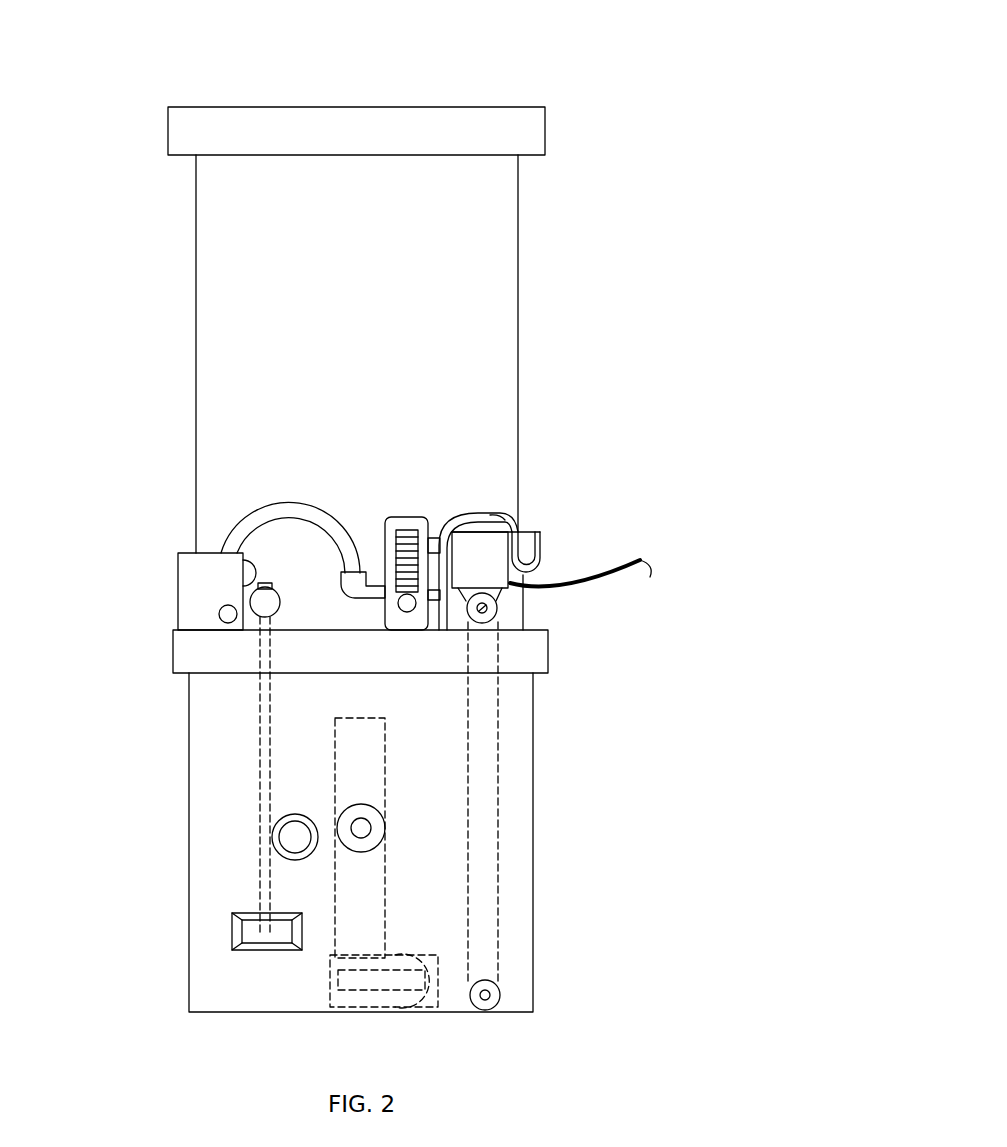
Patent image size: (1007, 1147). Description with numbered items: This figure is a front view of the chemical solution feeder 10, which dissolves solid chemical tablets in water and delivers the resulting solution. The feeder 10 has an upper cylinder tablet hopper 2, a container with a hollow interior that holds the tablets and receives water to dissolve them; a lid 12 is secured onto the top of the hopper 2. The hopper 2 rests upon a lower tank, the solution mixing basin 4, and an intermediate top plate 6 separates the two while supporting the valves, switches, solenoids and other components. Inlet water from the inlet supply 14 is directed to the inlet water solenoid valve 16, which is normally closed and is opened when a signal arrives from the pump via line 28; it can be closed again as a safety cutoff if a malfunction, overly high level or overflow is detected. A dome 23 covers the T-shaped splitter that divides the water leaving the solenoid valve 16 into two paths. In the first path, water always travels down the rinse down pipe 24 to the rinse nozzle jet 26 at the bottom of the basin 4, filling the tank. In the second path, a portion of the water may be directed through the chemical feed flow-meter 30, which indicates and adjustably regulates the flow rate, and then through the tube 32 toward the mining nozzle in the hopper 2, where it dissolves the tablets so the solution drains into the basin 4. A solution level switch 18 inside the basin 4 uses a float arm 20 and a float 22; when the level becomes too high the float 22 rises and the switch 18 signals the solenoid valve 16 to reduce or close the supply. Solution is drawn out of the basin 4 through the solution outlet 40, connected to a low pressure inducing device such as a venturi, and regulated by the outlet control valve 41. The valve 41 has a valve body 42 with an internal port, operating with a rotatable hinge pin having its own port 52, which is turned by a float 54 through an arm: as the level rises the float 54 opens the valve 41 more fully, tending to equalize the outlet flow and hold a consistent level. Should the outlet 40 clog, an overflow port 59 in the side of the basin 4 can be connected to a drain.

The feeder 10 is at (543, 43).
The lid 12 is at (168, 128).
The tablet hopper 2 is at (520, 222).
The solution mixing basin 4 is at (512, 738).
The intermediate top plate 6 is at (550, 632).
The inlet supply 14 is at (500, 602).
The inlet water solenoid valve 16 is at (478, 545).
The solution level switch 18 is at (203, 577).
The float arm 20 is at (263, 695).
The float 22 is at (268, 932).
The dome 23 is at (490, 515).
The rinse down pipe 24 is at (487, 882).
The rinse nozzle jet 26 is at (497, 996).
The line 28 is at (597, 578).
The chemical feed flow-meter 30 is at (406, 515).
The tube 32 is at (286, 502).
The solution outlet 40 is at (365, 830).
The outlet control valve 41 is at (365, 873).
The valve body 42 is at (370, 740).
The port 52 is at (367, 982).
The float 54 is at (427, 955).
The overflow port 59 is at (292, 832).